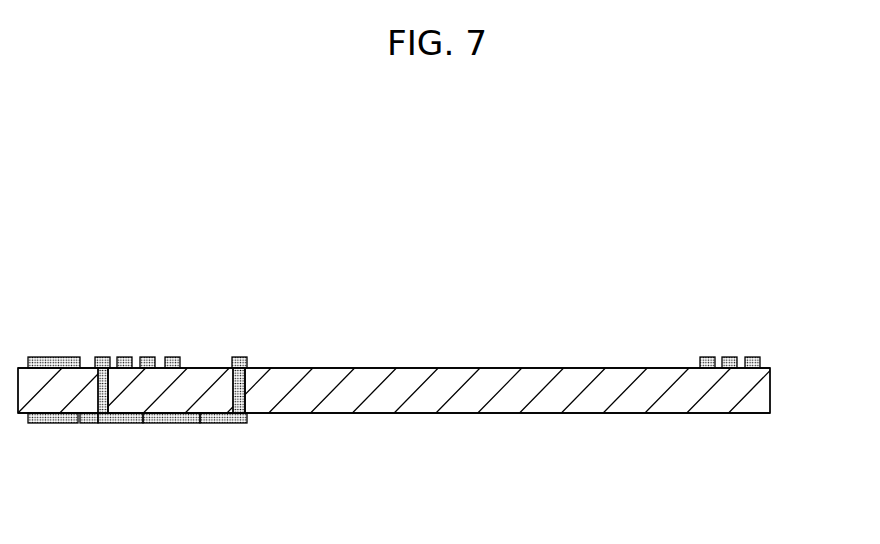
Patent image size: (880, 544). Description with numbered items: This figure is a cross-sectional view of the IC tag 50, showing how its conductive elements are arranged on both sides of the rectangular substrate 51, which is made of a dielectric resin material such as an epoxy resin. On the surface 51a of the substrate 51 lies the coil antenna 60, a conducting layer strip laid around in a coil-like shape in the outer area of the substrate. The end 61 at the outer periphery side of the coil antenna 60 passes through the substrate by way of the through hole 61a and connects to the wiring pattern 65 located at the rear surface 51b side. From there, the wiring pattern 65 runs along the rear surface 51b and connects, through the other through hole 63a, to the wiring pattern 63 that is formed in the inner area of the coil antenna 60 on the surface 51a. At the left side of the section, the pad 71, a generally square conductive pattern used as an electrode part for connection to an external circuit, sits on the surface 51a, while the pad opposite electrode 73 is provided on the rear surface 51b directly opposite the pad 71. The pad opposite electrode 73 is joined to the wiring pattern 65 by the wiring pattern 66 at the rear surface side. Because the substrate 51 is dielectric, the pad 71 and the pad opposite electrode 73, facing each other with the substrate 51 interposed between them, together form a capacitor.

The IC tag 50 is at (568, 415).
The substrate 51 is at (770, 378).
The surface 51a is at (766, 366).
The rear surface 51b is at (753, 413).
The coil antenna 60 is at (187, 350).
The end 61 is at (102, 357).
The through hole 61a is at (108, 378).
The wiring pattern 63 is at (238, 357).
The through hole 63a is at (246, 391).
The wiring pattern 65 is at (202, 423).
The wiring pattern 66 is at (90, 423).
The pad 71 is at (35, 357).
The pad opposite electrode 73 is at (52, 423).